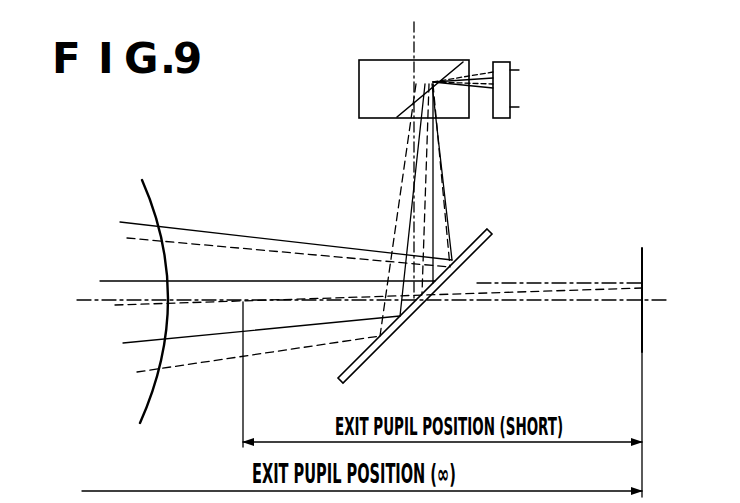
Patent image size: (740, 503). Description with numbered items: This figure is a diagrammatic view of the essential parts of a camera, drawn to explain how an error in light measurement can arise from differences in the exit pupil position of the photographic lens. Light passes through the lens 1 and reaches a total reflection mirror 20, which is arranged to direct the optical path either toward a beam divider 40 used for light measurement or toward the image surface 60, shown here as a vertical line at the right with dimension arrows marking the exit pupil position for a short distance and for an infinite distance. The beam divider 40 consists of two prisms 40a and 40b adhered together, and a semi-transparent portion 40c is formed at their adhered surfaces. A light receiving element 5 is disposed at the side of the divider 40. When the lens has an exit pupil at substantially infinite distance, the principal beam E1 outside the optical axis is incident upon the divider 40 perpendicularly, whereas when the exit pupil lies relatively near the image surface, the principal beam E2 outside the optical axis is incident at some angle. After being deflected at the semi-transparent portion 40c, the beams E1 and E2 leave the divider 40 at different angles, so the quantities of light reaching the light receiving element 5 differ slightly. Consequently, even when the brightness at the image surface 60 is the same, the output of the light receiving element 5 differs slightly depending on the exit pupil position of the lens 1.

The lens 1 is at (142, 400).
The light receiving element 5 is at (498, 62).
The total reflection mirror 20 is at (355, 373).
The beam divider 40 is at (388, 69).
The prism 40a is at (367, 97).
The prism 40b is at (462, 65).
The semi-transparent portion 40c is at (428, 80).
The image surface 60 is at (642, 334).
The principal beam E1 is at (433, 197).
The principal beam E2 is at (428, 180).